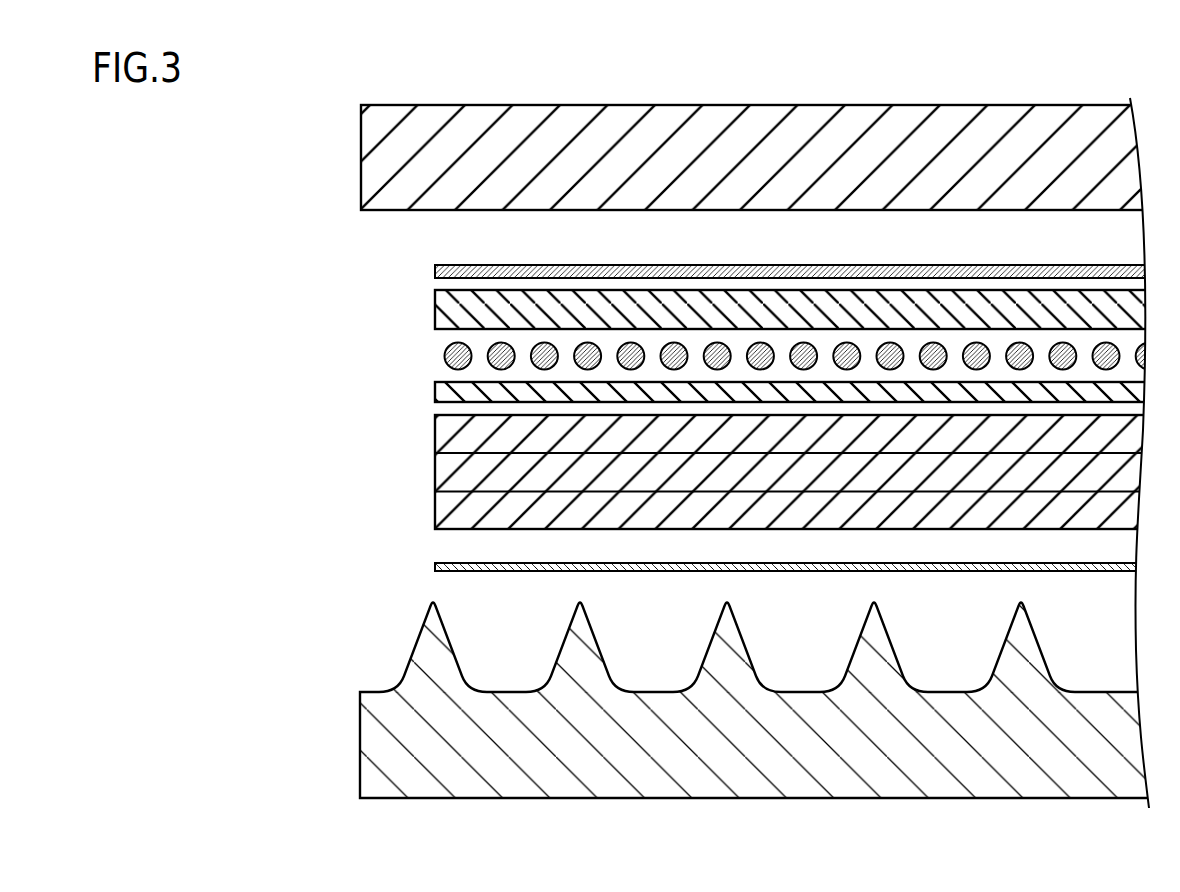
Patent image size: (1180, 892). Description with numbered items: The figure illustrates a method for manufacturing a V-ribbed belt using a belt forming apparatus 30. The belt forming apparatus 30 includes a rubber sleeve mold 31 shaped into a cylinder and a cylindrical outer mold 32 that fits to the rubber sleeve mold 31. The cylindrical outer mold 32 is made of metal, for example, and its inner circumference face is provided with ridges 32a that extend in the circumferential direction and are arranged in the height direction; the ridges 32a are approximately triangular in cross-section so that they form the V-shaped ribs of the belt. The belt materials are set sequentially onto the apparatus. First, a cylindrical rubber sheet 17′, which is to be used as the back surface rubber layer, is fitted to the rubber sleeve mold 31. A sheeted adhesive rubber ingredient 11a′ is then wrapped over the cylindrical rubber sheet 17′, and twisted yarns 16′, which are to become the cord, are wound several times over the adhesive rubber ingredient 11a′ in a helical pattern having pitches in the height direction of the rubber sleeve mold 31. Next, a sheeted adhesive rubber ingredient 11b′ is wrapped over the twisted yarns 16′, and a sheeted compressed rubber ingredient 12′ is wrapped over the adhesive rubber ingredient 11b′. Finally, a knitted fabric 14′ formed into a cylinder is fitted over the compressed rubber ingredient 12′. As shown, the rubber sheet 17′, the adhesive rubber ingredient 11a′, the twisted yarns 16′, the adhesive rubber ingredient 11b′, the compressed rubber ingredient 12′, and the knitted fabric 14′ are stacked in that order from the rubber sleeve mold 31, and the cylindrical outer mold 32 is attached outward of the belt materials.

The belt forming apparatus 30 is at (179, 318).
The rubber sleeve mold 31 is at (370, 136).
The cylindrical outer mold 32 is at (410, 720).
The ridges 32a is at (436, 653).
The cylindrical rubber sheet 17′ is at (435, 272).
The adhesive rubber ingredient 11a′ is at (458, 313).
The twisted yarns 16′ is at (801, 352).
The adhesive rubber ingredient 11b′ is at (447, 394).
The compressed rubber ingredient 12′ is at (445, 430).
The knitted fabric 14′ is at (440, 565).